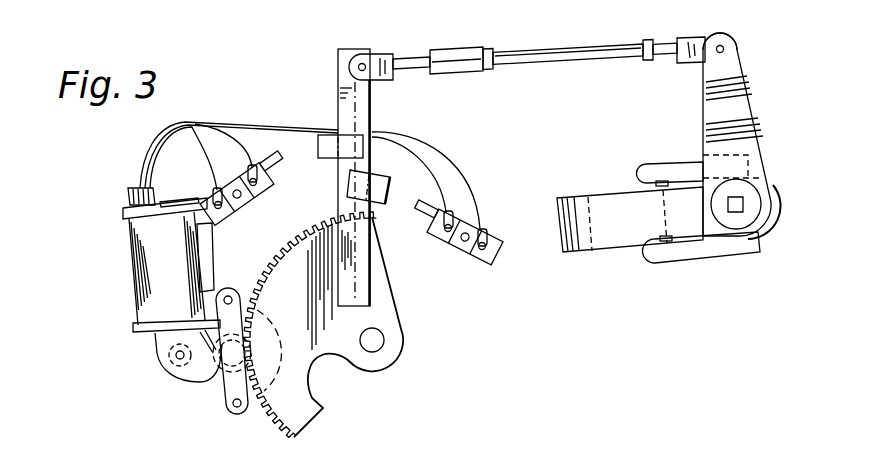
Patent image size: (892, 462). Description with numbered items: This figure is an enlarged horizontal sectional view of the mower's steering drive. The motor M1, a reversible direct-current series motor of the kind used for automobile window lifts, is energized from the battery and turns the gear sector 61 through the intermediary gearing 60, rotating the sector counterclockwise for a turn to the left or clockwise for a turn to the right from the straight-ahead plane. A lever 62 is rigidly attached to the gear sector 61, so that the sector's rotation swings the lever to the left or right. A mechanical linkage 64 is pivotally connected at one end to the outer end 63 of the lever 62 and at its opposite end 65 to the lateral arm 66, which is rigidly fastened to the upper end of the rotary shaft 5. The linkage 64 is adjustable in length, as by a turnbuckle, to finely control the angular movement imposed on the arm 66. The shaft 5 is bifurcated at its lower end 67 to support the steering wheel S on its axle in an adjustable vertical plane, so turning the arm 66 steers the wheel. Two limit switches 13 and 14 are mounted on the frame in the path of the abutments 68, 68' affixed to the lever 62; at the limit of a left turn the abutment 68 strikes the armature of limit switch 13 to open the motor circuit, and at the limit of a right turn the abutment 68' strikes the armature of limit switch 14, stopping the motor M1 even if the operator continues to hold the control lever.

The shaft 5 is at (752, 210).
The limit switch 13 is at (243, 200).
The limit switch 14 is at (458, 248).
The gearing 60 is at (232, 353).
The gear sector 61 is at (312, 397).
The lever 62 is at (360, 110).
The outer end of lever 63 is at (352, 62).
The mechanical linkage 64 is at (572, 53).
The opposite end of linkage 65 is at (726, 50).
The lateral arm 66 is at (761, 138).
The bifurcated lower end 67 is at (669, 165).
The abutment 68 is at (330, 173).
The abutment 68' is at (413, 167).
The motor M1 is at (143, 244).
The steering wheel S is at (584, 252).